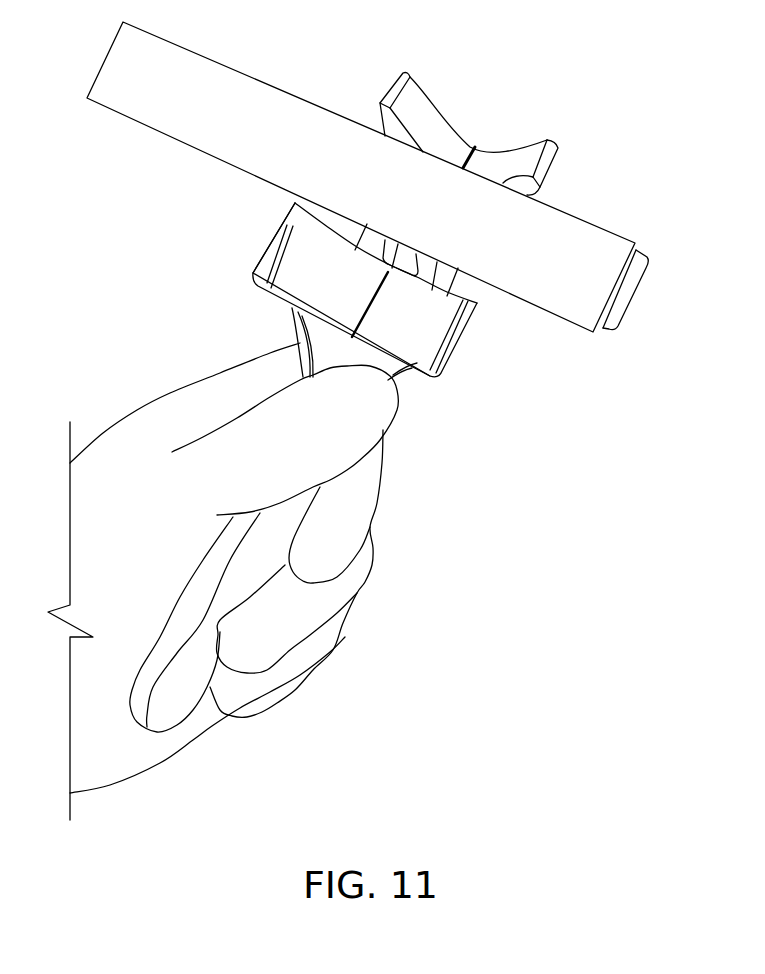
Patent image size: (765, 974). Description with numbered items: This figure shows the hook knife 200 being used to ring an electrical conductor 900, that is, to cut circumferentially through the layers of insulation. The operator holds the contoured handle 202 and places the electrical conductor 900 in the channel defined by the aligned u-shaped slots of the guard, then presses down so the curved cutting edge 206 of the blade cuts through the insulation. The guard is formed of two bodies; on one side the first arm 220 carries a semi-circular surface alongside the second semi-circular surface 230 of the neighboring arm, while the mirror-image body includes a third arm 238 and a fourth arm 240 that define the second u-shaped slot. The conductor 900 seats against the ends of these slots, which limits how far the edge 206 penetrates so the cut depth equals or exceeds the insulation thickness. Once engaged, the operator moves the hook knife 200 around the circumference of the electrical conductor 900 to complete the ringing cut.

The electrical conductor 900 is at (222, 79).
The fourth arm 240 is at (396, 82).
The second semi-circular surface 230 is at (550, 152).
The third arm 238 is at (262, 235).
The curved cutting edge 206 is at (458, 272).
The first arm 220 is at (453, 360).
The hook knife 200 is at (483, 364).
The handle 202 is at (177, 722).